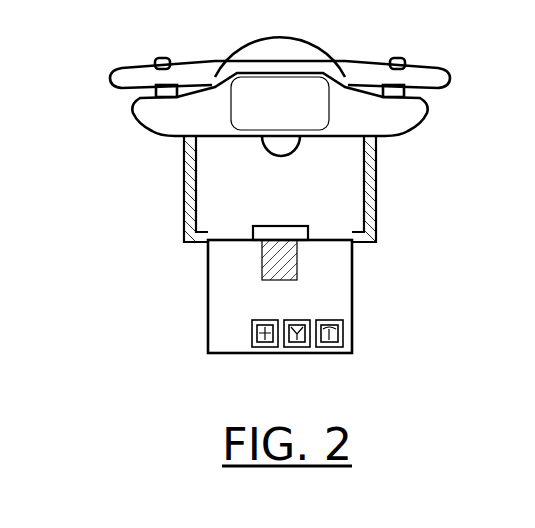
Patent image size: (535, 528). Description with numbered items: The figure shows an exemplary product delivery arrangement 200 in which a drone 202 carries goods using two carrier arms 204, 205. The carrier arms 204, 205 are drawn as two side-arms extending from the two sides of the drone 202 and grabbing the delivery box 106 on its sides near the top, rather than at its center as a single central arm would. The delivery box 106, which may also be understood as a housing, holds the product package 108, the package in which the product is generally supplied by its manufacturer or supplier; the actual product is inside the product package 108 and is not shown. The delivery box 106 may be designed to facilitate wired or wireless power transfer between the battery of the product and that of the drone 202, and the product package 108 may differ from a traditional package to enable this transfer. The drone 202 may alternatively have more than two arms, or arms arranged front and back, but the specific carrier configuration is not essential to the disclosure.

The product delivery arrangement 200 is at (148, 331).
The drone 202 is at (128, 132).
The carrier arm 204 is at (185, 200).
The carrier arm 205 is at (378, 180).
The delivery box 106 is at (287, 226).
The product package 108 is at (333, 292).